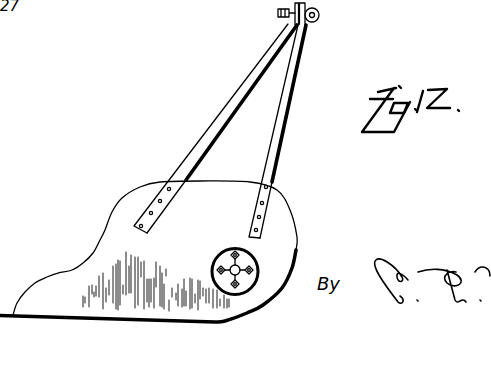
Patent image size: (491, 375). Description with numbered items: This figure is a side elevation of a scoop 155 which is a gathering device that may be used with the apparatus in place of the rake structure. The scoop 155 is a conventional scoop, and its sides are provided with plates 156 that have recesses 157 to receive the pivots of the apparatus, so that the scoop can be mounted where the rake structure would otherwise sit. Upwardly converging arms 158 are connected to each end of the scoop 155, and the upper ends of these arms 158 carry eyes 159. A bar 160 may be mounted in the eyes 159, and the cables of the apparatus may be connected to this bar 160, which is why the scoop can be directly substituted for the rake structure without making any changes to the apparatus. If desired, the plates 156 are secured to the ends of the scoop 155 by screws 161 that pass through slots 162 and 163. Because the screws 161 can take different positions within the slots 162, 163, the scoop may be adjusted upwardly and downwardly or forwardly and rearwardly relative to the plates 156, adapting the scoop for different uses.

The scoop 155 is at (283, 287).
The plates 156 is at (262, 274).
The recesses 157 is at (239, 267).
The upwardly converging arms 158 is at (271, 145).
The eyes 159 is at (315, 24).
The bar 160 is at (319, 14).
The screws 161 is at (238, 293).
The slots 162 is at (236, 251).
The slots 163 is at (213, 264).